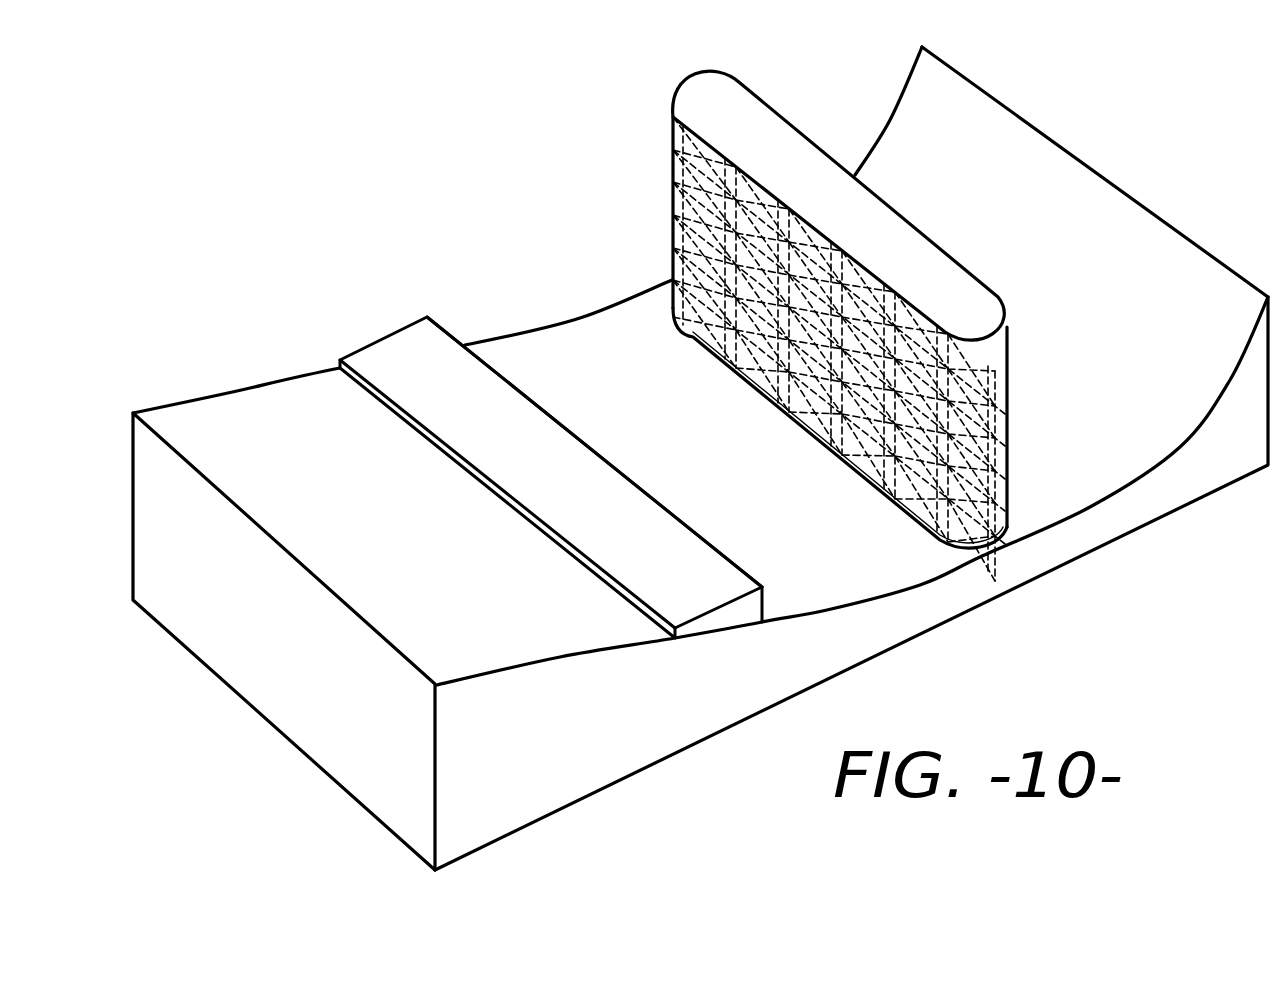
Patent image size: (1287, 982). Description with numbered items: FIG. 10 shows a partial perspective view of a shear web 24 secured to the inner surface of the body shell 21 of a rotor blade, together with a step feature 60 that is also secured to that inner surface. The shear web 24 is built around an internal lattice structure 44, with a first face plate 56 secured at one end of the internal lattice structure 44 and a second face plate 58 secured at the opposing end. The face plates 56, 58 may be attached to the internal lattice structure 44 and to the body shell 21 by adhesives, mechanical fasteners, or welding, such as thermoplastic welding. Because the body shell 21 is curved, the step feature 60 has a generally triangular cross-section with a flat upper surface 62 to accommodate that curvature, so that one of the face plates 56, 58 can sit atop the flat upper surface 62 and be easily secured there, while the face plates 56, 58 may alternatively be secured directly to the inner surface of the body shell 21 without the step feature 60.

The body shell 21 is at (647, 733).
The shear web 24 is at (867, 340).
The internal lattice structure 44 is at (672, 200).
The first face plate 56 is at (752, 120).
The second face plate 58 is at (755, 393).
The step feature 60 is at (503, 377).
The flat upper surface 62 is at (405, 360).